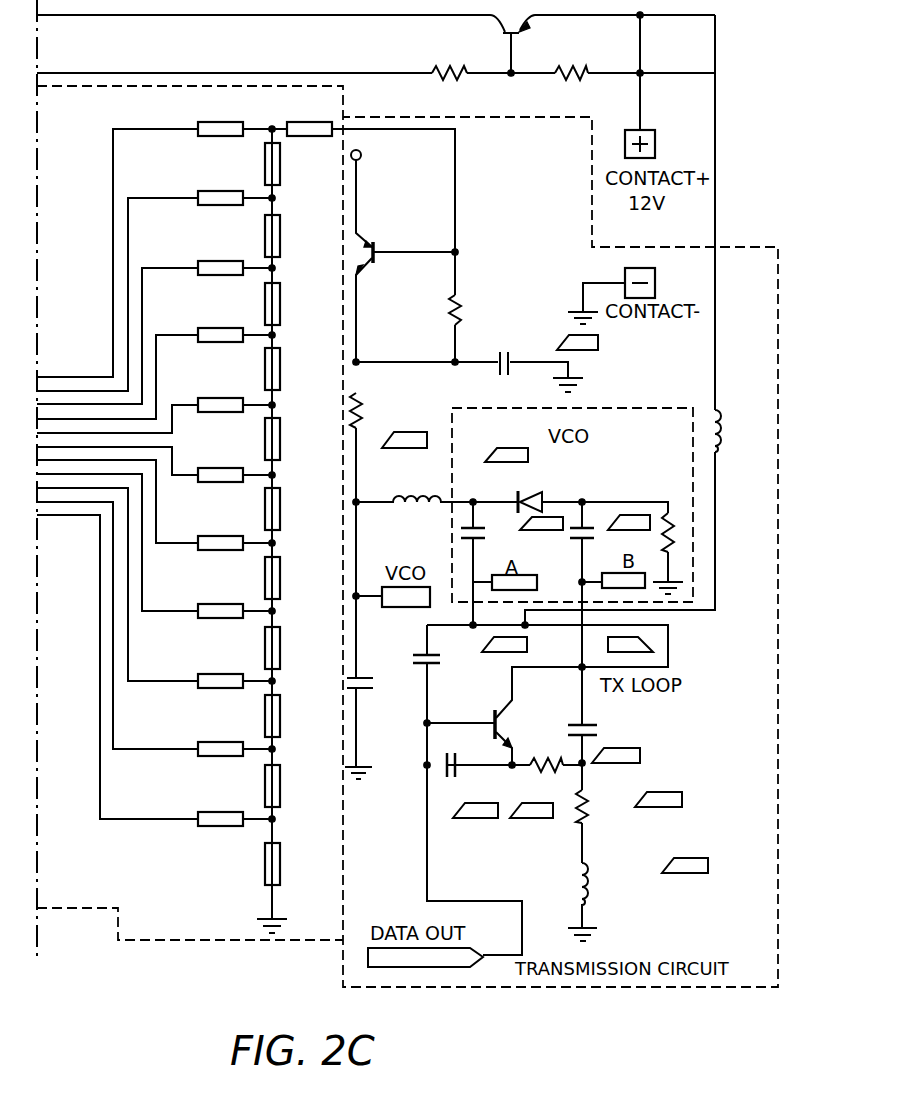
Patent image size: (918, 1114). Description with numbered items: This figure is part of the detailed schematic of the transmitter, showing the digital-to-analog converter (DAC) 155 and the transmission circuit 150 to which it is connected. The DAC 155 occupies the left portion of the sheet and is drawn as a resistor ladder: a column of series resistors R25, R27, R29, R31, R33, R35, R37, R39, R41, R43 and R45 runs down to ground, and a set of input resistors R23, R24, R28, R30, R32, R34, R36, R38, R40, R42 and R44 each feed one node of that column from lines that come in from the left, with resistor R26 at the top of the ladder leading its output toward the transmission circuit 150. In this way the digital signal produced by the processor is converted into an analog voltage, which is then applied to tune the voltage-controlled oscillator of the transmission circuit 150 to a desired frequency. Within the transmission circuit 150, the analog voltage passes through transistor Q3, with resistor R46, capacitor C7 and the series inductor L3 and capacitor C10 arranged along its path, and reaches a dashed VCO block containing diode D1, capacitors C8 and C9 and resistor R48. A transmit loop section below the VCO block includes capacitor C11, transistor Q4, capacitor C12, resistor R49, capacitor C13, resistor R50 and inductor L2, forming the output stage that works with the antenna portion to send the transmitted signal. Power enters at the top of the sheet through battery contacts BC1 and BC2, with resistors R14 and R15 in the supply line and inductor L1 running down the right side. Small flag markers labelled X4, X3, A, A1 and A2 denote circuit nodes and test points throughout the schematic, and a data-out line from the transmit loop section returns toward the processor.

The transmission circuit 150 is at (708, 987).
The digital-to-analog converter (DAC) 155 is at (161, 889).
The resistor R14 is at (451, 59).
The resistor R15 is at (574, 62).
The resistor R23 is at (221, 117).
The resistor R24 is at (221, 186).
The resistor R25 is at (298, 164).
The resistor R26 is at (309, 117).
The resistor R27 is at (298, 236).
The resistor R28 is at (221, 256).
The resistor R29 is at (298, 304).
The resistor R30 is at (221, 323).
The resistor R31 is at (298, 369).
The resistor R32 is at (221, 393).
The resistor R33 is at (298, 439).
The resistor R34 is at (221, 463).
The resistor R35 is at (298, 509).
The resistor R36 is at (221, 531).
The resistor R37 is at (298, 578).
The resistor R38 is at (221, 599).
The resistor R39 is at (298, 648).
The resistor R40 is at (221, 669).
The resistor R41 is at (298, 716).
The resistor R42 is at (221, 737).
The resistor R43 is at (298, 786).
The resistor R44 is at (221, 807).
The resistor R45 is at (298, 864).
The resistor R46 is at (479, 328).
The resistor R48 is at (670, 514).
The resistor R49 is at (545, 753).
The resistor R50 is at (605, 826).
The capacitor C7 is at (509, 348).
The capacitor C8 is at (488, 541).
The capacitor C9 is at (599, 541).
The capacitor C10 is at (382, 691).
The capacitor C11 is at (450, 667).
The capacitor C12 is at (461, 755).
The capacitor C13 is at (602, 722).
The inductor L1 is at (737, 431).
The inductor L2 is at (597, 902).
The inductor L3 is at (414, 484).
The transistor Q3 is at (403, 253).
The transistor Q4 is at (522, 720).
The diode D1 is at (518, 490).
The battery contact + BC1 is at (662, 146).
The battery contact - BC2 is at (662, 283).
The test point X4 is at (507, 390).
The test point X3 is at (612, 650).
The node A is at (589, 642).
The node A1 is at (531, 823).
The node A2 is at (583, 662).